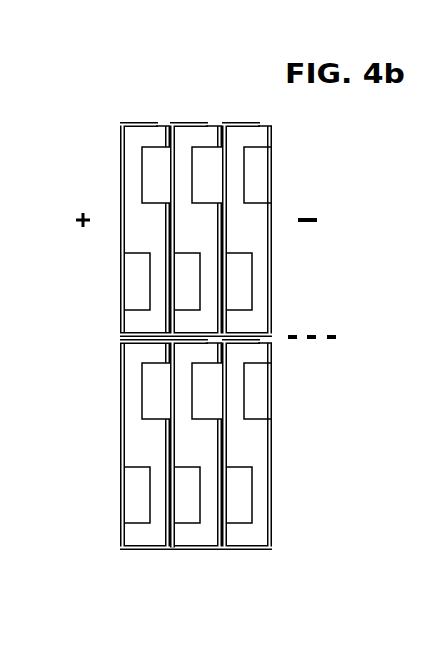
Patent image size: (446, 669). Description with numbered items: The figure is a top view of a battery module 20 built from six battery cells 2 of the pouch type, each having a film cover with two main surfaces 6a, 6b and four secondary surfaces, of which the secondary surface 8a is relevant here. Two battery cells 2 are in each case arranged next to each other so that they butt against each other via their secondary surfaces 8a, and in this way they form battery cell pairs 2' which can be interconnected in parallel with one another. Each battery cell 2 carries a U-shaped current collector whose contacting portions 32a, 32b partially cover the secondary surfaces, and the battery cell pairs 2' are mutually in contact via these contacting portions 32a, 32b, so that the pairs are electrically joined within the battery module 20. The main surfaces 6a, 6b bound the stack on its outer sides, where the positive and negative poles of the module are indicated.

The battery cell pair 2' is at (196, 180).
The battery cell 2 is at (196, 495).
The main surface 6a is at (122, 172).
The main surface 6b is at (275, 245).
The secondary surface 8a is at (167, 546).
The battery module 20 is at (204, 336).
The contacting portion 32a is at (124, 340).
The contacting portion 32b is at (112, 350).